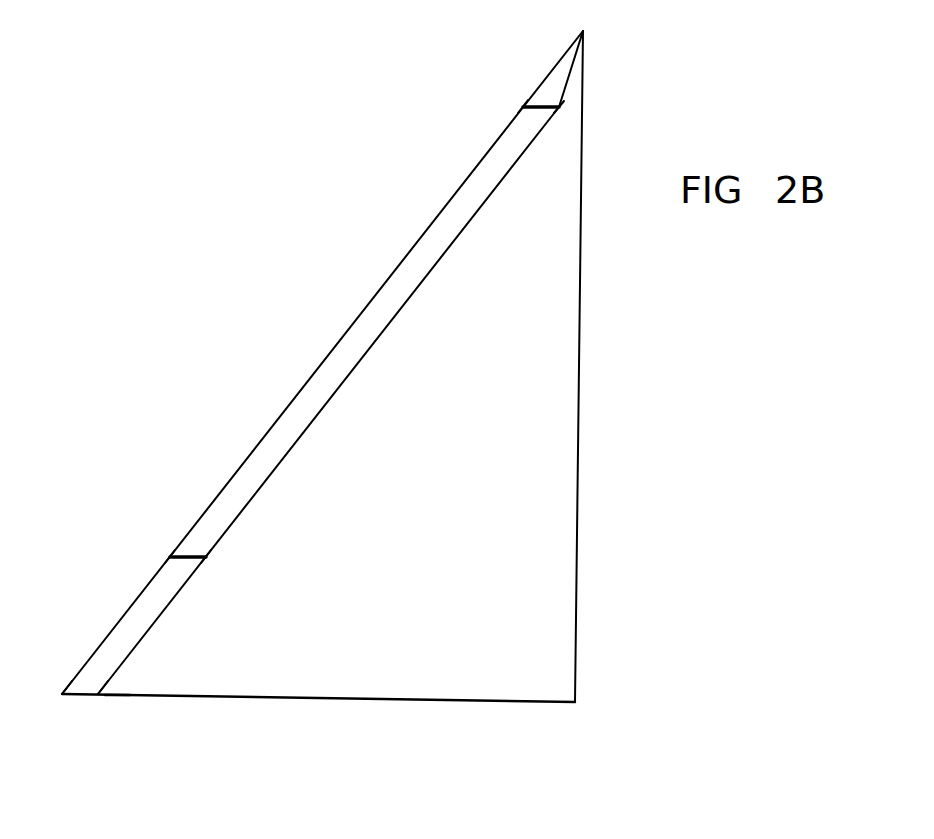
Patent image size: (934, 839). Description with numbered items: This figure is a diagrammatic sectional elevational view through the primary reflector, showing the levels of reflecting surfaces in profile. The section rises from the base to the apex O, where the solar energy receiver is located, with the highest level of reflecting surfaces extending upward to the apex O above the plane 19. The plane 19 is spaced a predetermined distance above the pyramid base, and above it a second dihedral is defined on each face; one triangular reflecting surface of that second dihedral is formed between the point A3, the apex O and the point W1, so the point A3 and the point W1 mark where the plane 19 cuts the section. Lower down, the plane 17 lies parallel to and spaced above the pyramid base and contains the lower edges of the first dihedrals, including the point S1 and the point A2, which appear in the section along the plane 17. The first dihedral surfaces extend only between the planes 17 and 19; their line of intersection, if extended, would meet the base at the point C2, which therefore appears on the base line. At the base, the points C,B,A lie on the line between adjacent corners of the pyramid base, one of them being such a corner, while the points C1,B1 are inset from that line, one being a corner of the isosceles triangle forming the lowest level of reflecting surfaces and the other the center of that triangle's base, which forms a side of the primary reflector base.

The apex O is at (583, 31).
The plane 19 is at (543, 106).
The point A3 is at (523, 107).
The point W1 is at (559, 107).
The plane 17 is at (188, 556).
The point A2 is at (170, 557).
The point S1 is at (206, 557).
The point C2 is at (117, 694).
The points C, B and A C,B,A is at (84, 713).
The points C1 and B1 C1,B1 is at (98, 694).